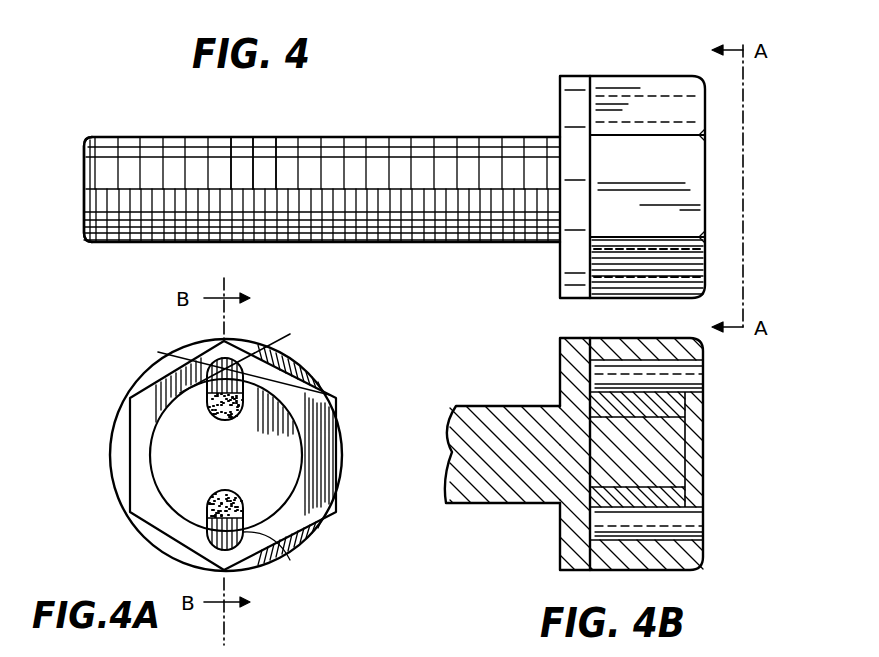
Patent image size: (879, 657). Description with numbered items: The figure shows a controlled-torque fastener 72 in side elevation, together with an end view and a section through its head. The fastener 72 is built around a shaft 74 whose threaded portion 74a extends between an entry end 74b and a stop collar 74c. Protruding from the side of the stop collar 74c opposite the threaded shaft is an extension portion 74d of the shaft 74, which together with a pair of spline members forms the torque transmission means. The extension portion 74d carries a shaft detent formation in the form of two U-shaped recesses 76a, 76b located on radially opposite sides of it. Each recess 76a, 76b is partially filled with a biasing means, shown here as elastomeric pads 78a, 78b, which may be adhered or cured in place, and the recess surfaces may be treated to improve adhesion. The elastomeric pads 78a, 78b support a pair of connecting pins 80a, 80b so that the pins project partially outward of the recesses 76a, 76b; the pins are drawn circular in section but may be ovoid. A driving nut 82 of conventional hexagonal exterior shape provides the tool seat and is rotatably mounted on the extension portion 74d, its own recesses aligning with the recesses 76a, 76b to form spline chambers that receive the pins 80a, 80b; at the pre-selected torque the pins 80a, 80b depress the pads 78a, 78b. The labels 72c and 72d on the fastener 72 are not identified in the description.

In FIG. 4, the controlled-torque fastener 72 is at (397, 128).
In FIG. 4A, the outer cylindrical surface 72c is at (340, 468).
In FIG. 4A, the inner bore 72d is at (258, 427).
In FIG. 4, the shaft 74 is at (430, 214).
In FIG. 4B, the shaft 74 is at (515, 500).
In FIG. 4, the threaded portion 74a is at (258, 190).
In FIG. 4, the entry end 74b is at (84, 181).
In FIG. 4, the stop collar 74c is at (574, 92).
In FIG. 4B, the stop collar 74c is at (577, 361).
In FIG. 4B, the extension portion 74d is at (668, 457).
In FIG. 4A, the U-shaped recess 76a is at (207, 395).
In FIG. 4A, the U-shaped recess 76b is at (207, 530).
In FIG. 4A, the elastomeric pad 78a is at (225, 421).
In FIG. 4B, the elastomeric pad 78a is at (697, 406).
In FIG. 4A, the elastomeric pad 78b is at (231, 492).
In FIG. 4B, the elastomeric pad 78b is at (680, 494).
In FIG. 4A, the connecting pin 80a is at (270, 356).
In FIG. 4B, the connecting pin 80a is at (690, 372).
In FIG. 4A, the connecting pin 80b is at (280, 552).
In FIG. 4B, the connecting pin 80b is at (688, 534).
In FIG. 4A, the driving nut 82 is at (120, 405).